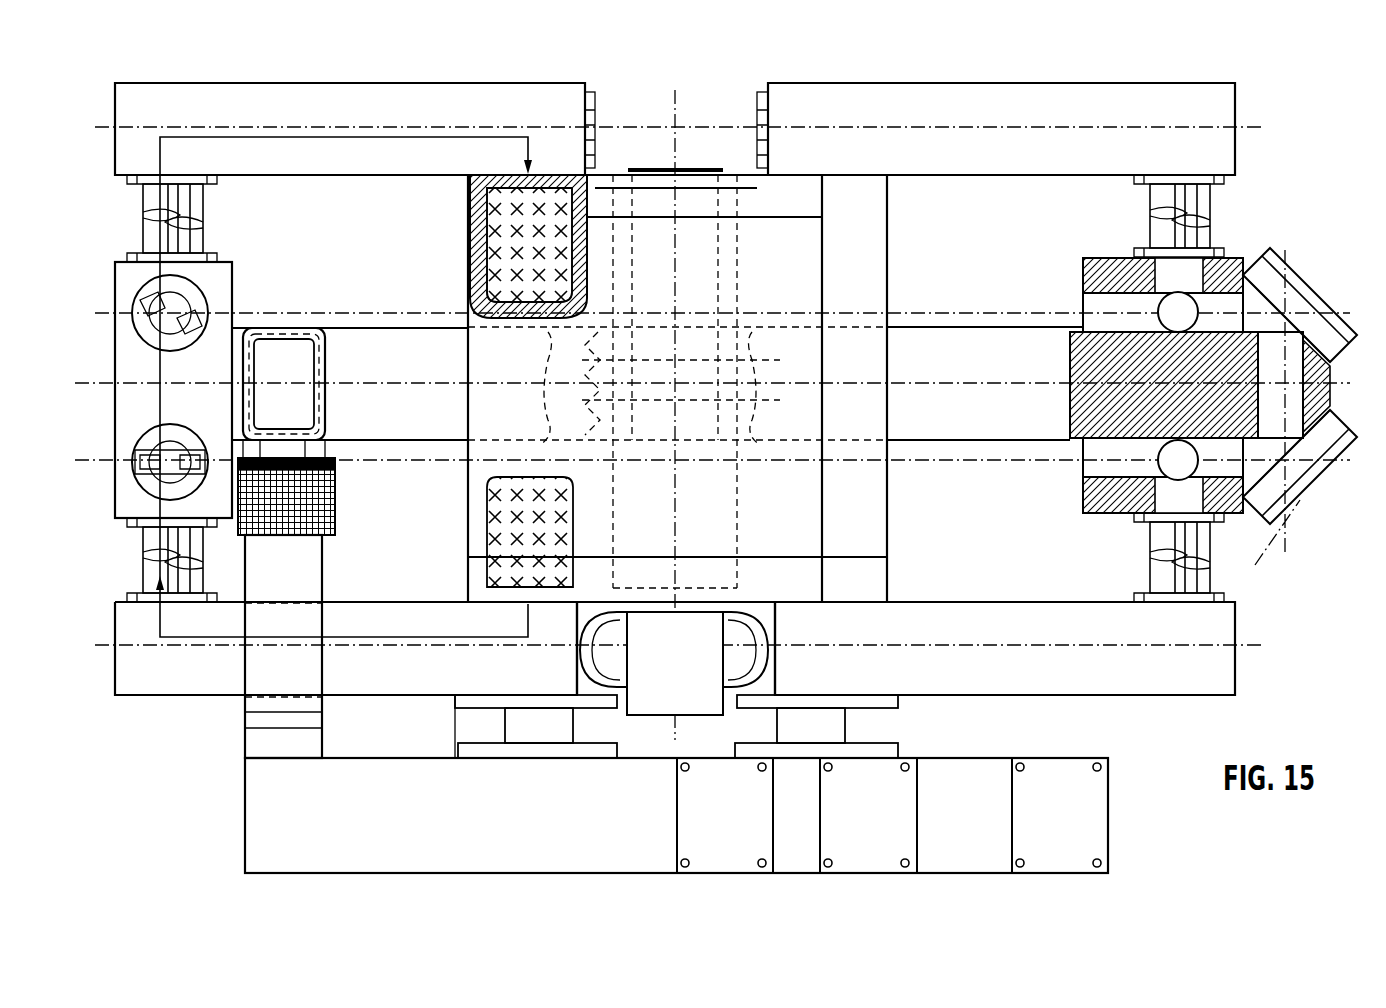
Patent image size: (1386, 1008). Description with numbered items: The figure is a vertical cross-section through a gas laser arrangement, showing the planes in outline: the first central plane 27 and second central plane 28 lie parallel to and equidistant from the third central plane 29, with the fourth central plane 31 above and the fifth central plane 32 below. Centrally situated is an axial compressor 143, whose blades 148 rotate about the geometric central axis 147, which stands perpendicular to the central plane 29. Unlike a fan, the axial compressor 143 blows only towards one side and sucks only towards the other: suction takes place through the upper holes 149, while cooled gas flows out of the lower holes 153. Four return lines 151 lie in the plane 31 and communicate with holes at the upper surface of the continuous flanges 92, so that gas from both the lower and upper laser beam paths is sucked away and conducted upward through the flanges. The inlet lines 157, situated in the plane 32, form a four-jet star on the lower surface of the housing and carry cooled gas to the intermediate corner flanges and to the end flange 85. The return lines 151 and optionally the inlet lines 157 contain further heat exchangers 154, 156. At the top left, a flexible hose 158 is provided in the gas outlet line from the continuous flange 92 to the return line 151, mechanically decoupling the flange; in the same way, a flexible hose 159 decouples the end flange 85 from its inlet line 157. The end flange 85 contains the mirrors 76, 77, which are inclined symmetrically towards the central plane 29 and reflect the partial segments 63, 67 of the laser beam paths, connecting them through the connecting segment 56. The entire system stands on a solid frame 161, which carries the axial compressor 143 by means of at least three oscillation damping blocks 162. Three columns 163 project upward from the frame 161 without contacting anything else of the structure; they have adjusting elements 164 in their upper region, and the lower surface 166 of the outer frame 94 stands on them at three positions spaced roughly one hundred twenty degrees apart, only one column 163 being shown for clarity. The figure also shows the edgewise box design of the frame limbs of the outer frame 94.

The fourth central plane 31 is at (108, 120).
The fifth central plane 32 is at (98, 640).
The first central plane 27 is at (94, 308).
The third central plane 29 is at (94, 378).
The second central plane 28 is at (94, 470).
The geometric central axis 147 is at (679, 110).
The upper holes 149 is at (540, 168).
The axial compressor 143 is at (808, 512).
The blades 148 is at (752, 320).
The continuous flange 92 is at (242, 286).
The flexible hose 158 is at (205, 233).
The flexible hose 159 is at (1150, 545).
The return line 151 is at (348, 157).
The outer frame 94 is at (430, 332).
The heat exchanger 154 is at (478, 222).
The heat exchanger 156 is at (485, 560).
The lower surface 166 is at (452, 455).
The adjusting element 164 is at (335, 520).
The column 163 is at (248, 722).
The solid frame 161 is at (250, 800).
The oscillation damping block 162 is at (515, 726).
The lower holes 153 is at (546, 600).
The inlet line 157 is at (360, 615).
The end flange 85 is at (1080, 292).
The partial segment 63 is at (1288, 262).
The mirror 76 is at (1310, 288).
The connecting segment 56 is at (1312, 476).
The mirror 77 is at (1292, 512).
The partial segment 67 is at (1264, 535).